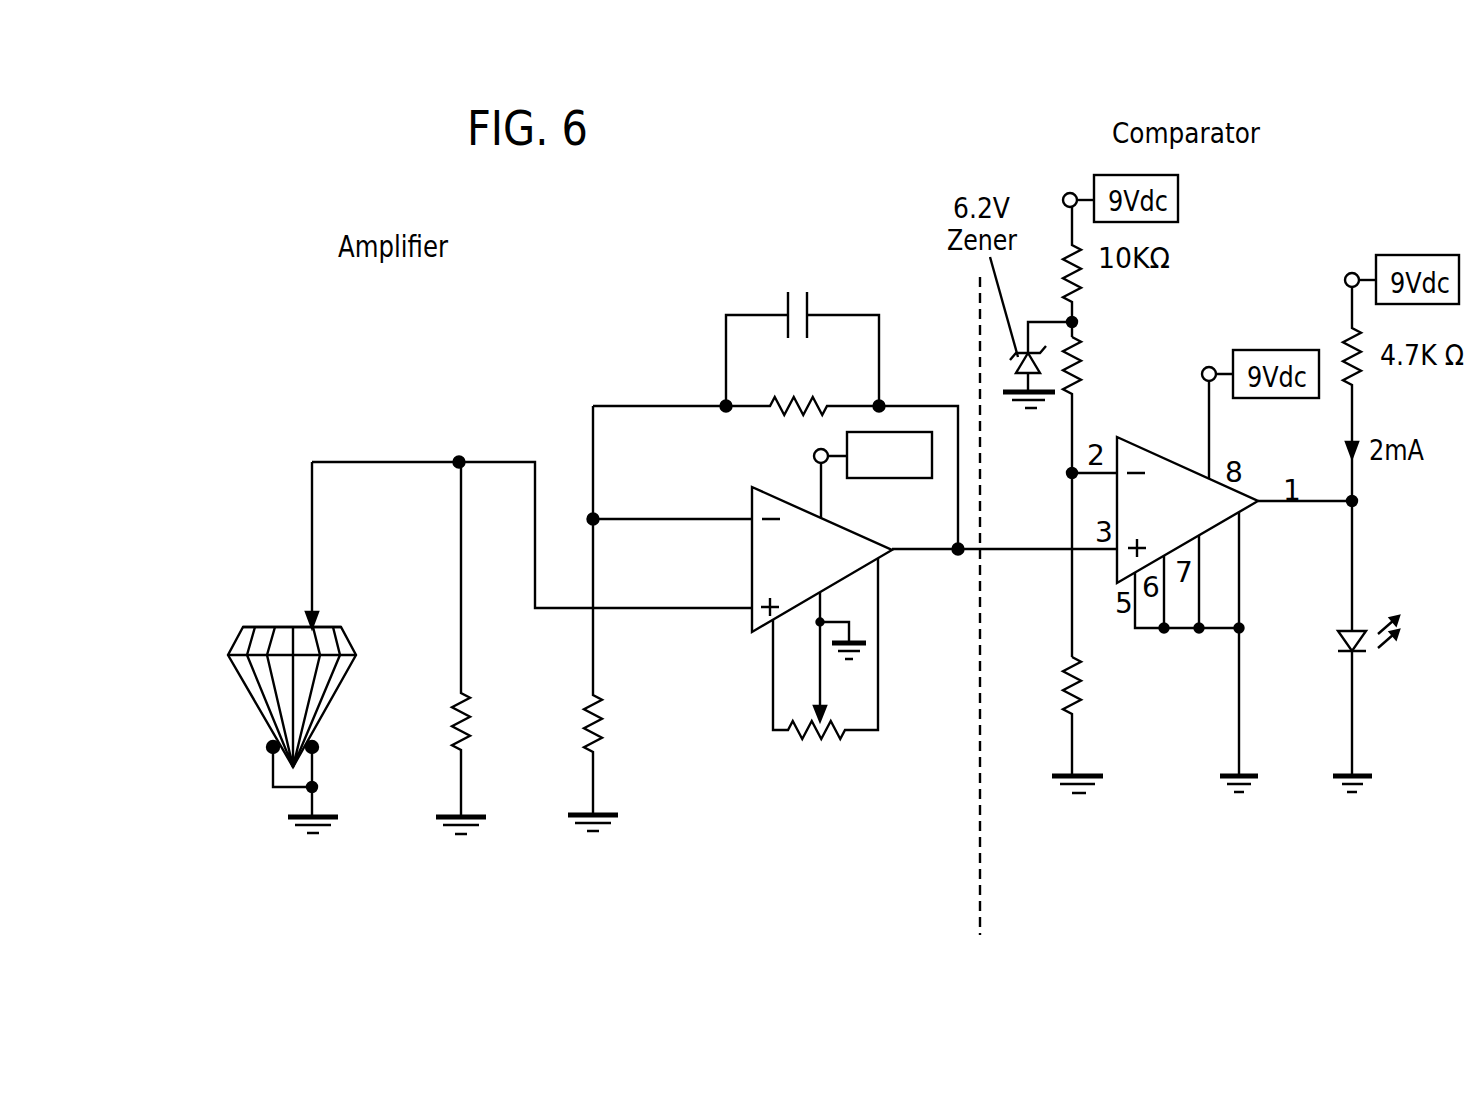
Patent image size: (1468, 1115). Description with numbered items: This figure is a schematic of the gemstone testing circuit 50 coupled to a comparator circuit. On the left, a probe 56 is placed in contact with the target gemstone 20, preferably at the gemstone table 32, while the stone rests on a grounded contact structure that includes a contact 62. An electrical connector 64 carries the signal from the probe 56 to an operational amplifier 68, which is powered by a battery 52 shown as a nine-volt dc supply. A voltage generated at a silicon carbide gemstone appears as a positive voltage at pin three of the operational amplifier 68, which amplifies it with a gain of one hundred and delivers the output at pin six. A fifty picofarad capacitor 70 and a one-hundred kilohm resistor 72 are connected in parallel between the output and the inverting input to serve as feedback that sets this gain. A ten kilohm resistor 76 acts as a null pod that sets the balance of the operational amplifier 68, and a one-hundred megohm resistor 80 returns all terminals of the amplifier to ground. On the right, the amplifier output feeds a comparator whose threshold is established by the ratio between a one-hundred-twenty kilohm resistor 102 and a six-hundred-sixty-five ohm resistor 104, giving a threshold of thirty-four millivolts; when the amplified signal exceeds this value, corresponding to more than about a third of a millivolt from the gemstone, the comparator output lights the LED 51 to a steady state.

The target gemstone 20 is at (263, 673).
The gemstone table 32 is at (255, 627).
The probe 56 is at (318, 622).
The contact 62 is at (317, 742).
The electrical connector 64 is at (390, 462).
The circuit 50 is at (548, 379).
The operational amplifier 68 is at (766, 492).
The capacitor 70 is at (787, 300).
The resistor 72 is at (807, 412).
The battery 52 is at (903, 478).
The resistor 76 is at (838, 732).
The resistor 80 is at (468, 723).
The resistor 102 is at (1083, 353).
The resistor 104 is at (1067, 680).
The LED 51 is at (1345, 638).